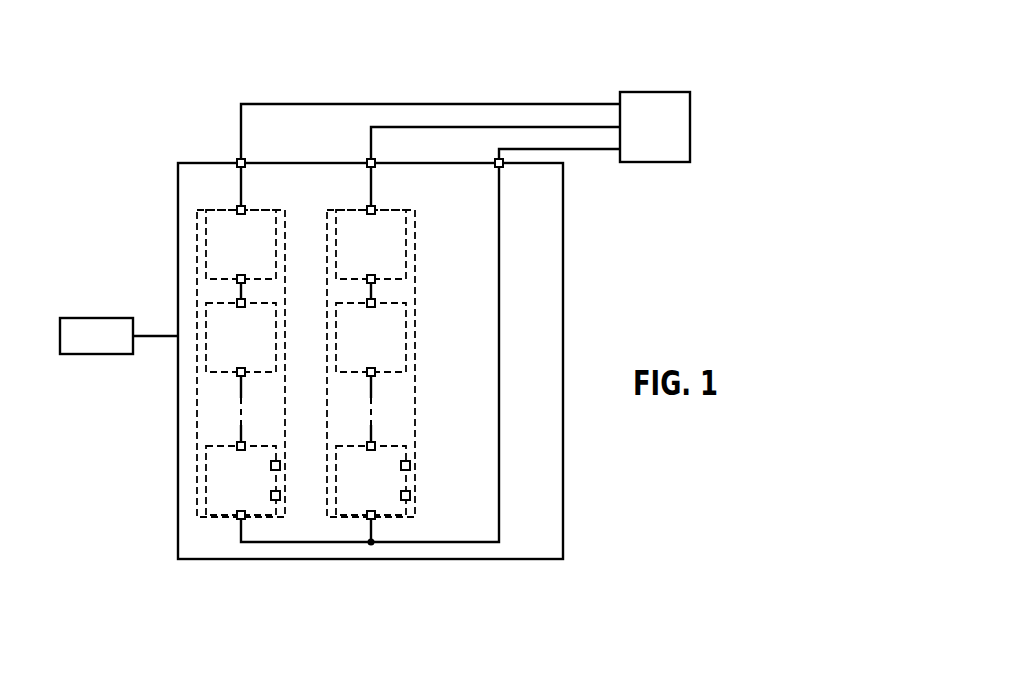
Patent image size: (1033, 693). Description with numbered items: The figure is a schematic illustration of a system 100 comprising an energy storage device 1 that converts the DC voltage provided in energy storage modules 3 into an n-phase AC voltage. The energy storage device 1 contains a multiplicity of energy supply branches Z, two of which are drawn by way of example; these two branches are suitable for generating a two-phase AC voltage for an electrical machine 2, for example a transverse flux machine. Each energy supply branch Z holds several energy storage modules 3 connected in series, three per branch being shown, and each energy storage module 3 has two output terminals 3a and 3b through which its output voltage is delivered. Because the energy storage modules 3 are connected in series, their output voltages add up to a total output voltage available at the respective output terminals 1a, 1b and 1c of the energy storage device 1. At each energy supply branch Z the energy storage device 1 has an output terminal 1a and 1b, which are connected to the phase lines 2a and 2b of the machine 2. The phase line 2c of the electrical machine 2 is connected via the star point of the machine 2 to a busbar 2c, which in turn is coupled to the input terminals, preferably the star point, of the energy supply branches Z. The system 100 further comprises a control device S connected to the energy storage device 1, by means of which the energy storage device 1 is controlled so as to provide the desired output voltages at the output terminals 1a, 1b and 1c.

The system 100 is at (194, 101).
The energy storage device 1 is at (178, 200).
The output terminal 1a is at (237, 163).
The output terminal 1b is at (367, 163).
The output terminal 1c is at (495, 163).
The electrical machine 2 is at (655, 92).
The phase line 2a is at (304, 104).
The phase line 2b is at (425, 127).
The phase line / busbar 2c is at (565, 149).
The energy storage module 3 is at (276, 247).
The output terminal 3a is at (367, 209).
The output terminal 3b is at (367, 283).
The control device S is at (97, 318).
The energy supply branch Z is at (197, 403).